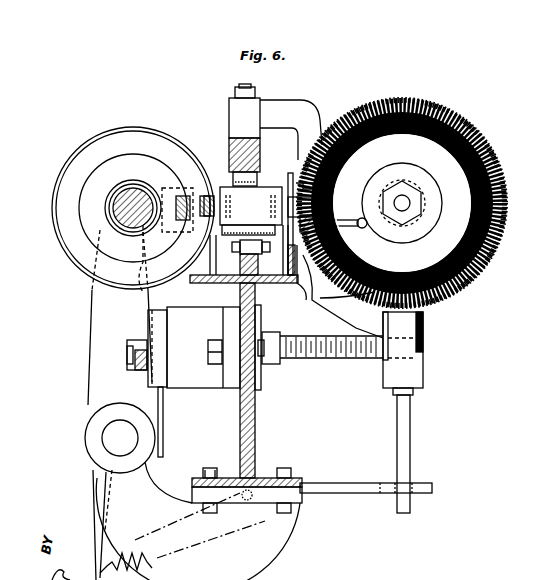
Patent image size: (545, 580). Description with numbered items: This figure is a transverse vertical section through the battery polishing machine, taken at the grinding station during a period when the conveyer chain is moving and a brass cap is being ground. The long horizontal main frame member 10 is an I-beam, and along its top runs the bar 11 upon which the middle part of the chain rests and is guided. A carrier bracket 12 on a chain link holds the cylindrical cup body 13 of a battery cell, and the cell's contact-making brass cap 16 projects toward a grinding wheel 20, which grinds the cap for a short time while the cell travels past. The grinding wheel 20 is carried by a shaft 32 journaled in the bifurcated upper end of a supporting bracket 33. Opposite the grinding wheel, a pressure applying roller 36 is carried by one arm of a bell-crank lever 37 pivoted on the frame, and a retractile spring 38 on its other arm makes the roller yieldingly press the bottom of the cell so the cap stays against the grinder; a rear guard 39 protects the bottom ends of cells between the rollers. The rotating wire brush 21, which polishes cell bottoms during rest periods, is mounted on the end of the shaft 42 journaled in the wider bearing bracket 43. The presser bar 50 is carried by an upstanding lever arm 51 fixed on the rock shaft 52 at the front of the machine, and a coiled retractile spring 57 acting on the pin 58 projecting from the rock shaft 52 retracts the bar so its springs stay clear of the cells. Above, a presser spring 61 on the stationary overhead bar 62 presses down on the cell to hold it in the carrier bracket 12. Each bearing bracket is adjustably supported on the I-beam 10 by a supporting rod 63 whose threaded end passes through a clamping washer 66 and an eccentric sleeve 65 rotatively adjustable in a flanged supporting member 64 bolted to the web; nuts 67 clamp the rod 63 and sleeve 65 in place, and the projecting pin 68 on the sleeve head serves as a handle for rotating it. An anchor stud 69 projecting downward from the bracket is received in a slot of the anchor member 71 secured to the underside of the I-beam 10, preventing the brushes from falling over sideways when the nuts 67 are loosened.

The main frame member 10 is at (256, 438).
The bar 11 is at (278, 280).
The carrier bracket 12 is at (235, 268).
The cup body 13 is at (258, 198).
The brass cap 16 is at (212, 204).
The grinding wheel 20 is at (64, 185).
The brush 21 is at (455, 120).
The shaft 32 is at (110, 220).
The supporting bracket 33 is at (116, 206).
The pressure applying roller 36 is at (320, 205).
The bell-crank lever 37 is at (316, 224).
The retractile spring 38 is at (363, 229).
The rear guard 39 is at (305, 262).
The shaft 42 is at (404, 207).
The bearing bracket 43 is at (410, 320).
The presser bar 50 is at (168, 188).
The lever arm 51 is at (106, 313).
The rock shaft 52 is at (114, 437).
The coiled retractile spring 57 is at (135, 566).
The pin 58 is at (110, 528).
The presser spring 61 is at (228, 178).
The overhead bar 62 is at (252, 138).
The supporting rod 63 is at (124, 347).
The flanged supporting member 64 is at (212, 384).
The eccentric sleeve 65 is at (160, 334).
The clamping washer 66 is at (260, 323).
The nut 67 is at (138, 368).
The projecting pin 68 is at (165, 440).
The anchor stud 69 is at (404, 433).
The anchor member 71 is at (350, 483).